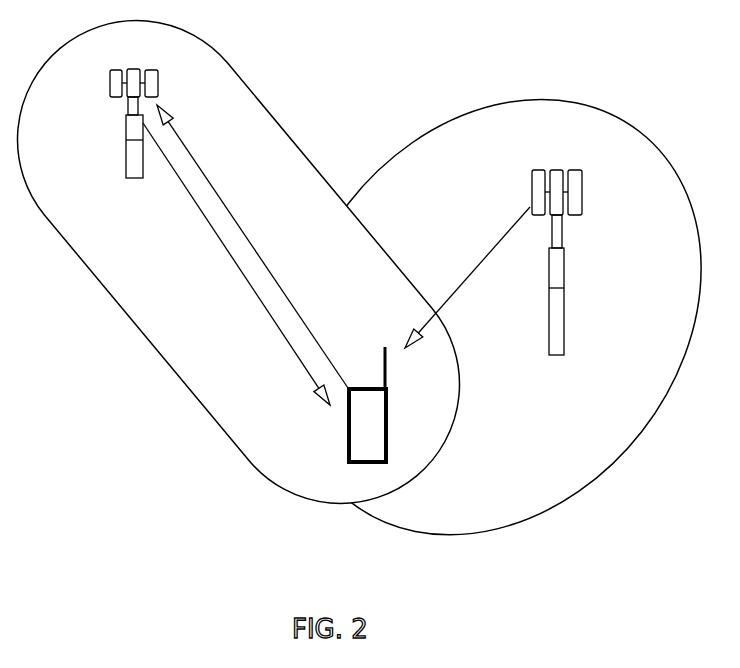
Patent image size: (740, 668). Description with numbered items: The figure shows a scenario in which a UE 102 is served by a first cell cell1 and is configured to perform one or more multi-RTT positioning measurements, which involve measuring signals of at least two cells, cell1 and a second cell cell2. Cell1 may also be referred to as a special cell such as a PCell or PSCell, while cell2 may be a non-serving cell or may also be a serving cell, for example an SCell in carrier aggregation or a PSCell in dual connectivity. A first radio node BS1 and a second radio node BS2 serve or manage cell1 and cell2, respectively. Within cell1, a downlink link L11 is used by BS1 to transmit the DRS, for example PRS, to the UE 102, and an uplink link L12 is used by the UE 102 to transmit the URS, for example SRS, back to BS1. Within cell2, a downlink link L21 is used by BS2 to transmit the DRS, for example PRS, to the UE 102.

The first cell cell1 is at (272, 117).
The second cell cell2 is at (552, 95).
The first radio node BS1 is at (125, 175).
The second radio node BS2 is at (565, 317).
The UE 102 is at (387, 435).
The downlink link in cell1 L11 is at (236, 264).
The uplink link in cell1 L12 is at (252, 246).
The downlink link in cell2 L21 is at (467, 277).